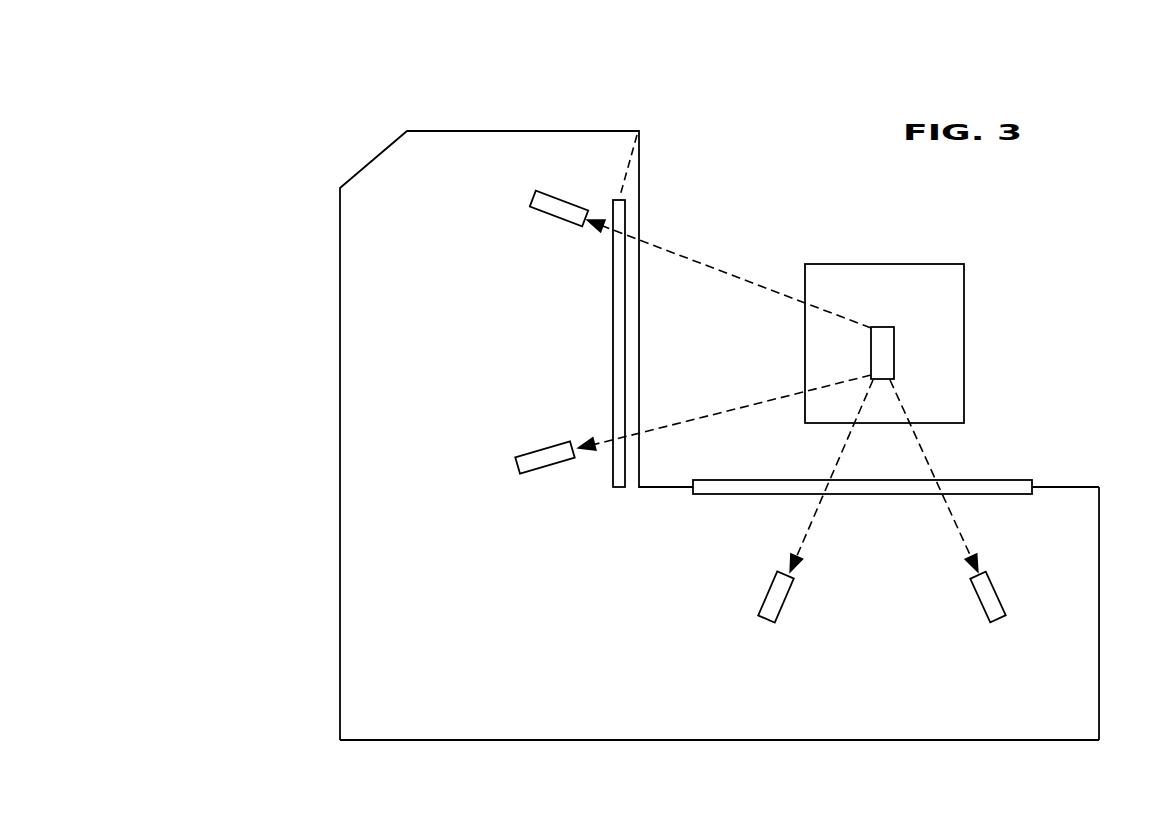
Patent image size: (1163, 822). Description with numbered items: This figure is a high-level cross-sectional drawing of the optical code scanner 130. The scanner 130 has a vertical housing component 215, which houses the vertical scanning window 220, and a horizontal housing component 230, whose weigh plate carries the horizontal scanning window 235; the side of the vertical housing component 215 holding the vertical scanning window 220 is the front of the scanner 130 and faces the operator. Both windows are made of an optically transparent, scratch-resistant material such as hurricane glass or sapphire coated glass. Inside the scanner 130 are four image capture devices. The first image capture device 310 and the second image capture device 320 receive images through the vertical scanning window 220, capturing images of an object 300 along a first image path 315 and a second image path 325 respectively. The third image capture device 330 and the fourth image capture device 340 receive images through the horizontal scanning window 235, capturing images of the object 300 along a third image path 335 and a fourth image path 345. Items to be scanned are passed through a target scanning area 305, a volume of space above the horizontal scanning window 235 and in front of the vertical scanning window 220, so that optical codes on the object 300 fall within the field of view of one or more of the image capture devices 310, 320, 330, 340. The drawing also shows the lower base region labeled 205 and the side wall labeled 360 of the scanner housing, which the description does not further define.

The optical code scanner 130 is at (273, 68).
The base 205 is at (388, 698).
The vertical housing component 215 is at (608, 131).
The vertical scanning window 220 is at (613, 198).
The horizontal housing component 230 is at (1078, 487).
The horizontal scanning window 235 is at (972, 480).
The object 300 is at (894, 362).
The target scanning area 305 is at (887, 264).
The first image capture device 310 is at (555, 218).
The first image path 315 is at (703, 265).
The second image capture device 320 is at (530, 453).
The second image path 325 is at (742, 408).
The third image capture device 330 is at (762, 594).
The third image path 335 is at (843, 447).
The fourth image capture device 340 is at (997, 622).
The fourth image path 345 is at (950, 515).
The side wall 360 is at (340, 509).